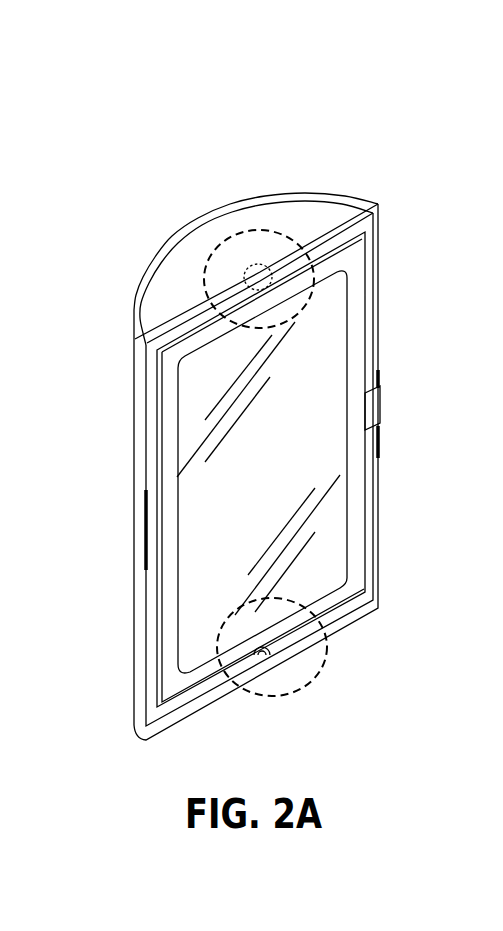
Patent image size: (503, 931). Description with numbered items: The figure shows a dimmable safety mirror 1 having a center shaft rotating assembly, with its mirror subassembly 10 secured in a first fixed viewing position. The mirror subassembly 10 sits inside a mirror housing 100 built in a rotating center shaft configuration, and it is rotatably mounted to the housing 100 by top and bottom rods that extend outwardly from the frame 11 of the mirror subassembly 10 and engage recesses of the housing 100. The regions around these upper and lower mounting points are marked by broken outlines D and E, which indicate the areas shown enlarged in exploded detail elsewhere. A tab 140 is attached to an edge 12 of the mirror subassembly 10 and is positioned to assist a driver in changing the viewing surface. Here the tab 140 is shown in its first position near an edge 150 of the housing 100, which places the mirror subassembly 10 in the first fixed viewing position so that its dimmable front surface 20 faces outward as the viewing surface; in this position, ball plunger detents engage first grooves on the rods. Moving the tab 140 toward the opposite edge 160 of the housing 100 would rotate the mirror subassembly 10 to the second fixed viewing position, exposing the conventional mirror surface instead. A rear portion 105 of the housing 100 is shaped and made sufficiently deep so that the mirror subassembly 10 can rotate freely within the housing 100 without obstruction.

The dimmable safety mirror 1 is at (170, 146).
The mirror subassembly 10 is at (213, 678).
The frame 11 is at (362, 347).
The edge 12 is at (379, 293).
The dimmable front surface 20 is at (331, 537).
The mirror housing 100 is at (257, 217).
The rear portion 105 is at (140, 253).
The tab 140 is at (382, 398).
The edge 150 is at (381, 428).
The edge 160 is at (146, 525).
The broken outline D is at (295, 240).
The broken outline E is at (328, 647).